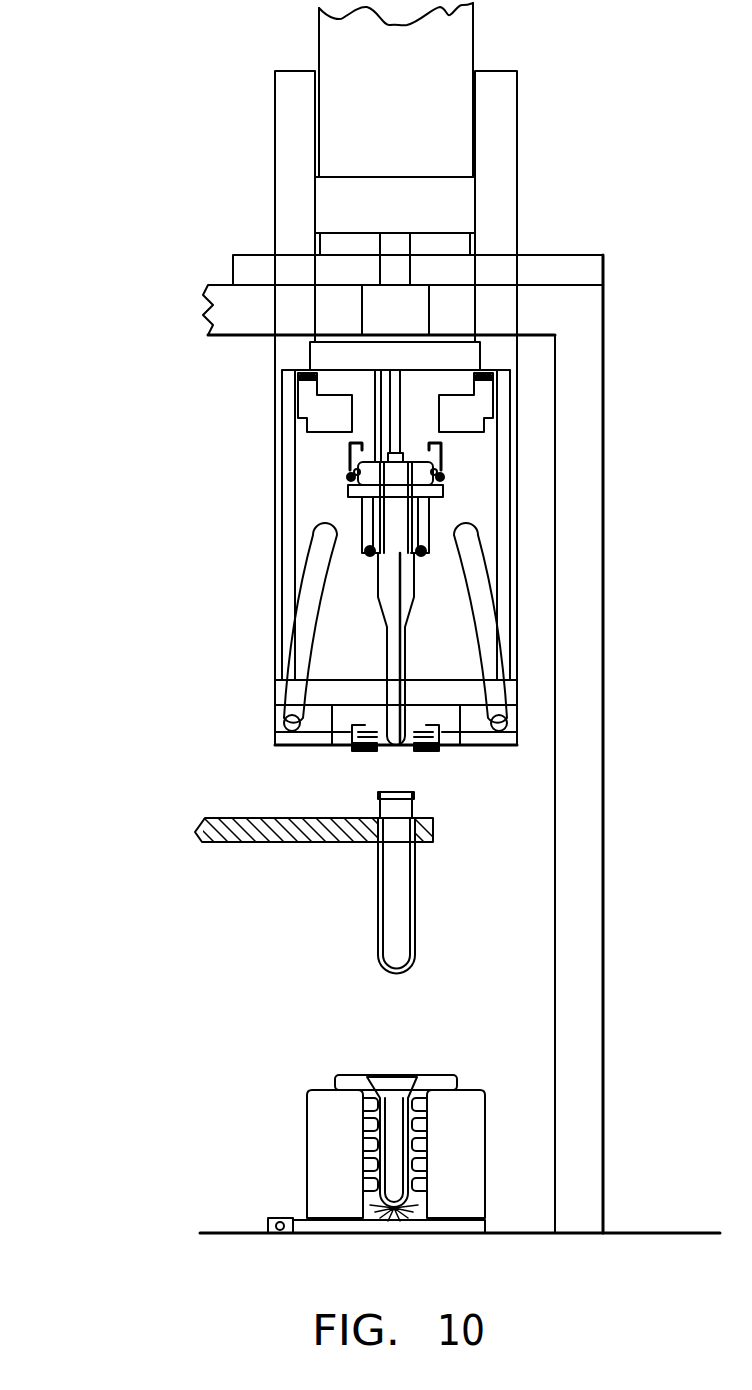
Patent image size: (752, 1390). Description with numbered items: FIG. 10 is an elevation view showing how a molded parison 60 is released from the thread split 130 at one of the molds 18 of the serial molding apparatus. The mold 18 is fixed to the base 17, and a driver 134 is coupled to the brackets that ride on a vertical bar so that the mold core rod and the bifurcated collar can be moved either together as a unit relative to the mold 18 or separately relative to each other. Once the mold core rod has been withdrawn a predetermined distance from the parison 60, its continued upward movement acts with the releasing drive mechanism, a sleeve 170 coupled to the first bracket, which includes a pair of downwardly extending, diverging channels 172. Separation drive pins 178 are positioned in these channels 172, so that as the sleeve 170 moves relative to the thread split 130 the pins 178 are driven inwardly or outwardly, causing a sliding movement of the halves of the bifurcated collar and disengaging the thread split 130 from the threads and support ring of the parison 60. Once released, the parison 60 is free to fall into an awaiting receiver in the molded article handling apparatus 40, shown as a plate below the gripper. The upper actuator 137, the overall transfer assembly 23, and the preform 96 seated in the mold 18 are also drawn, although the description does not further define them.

The actuator cylinder 137 is at (450, 43).
The driver 134 is at (260, 183).
The base 17 is at (590, 831).
The transfer gripper assembly 23 is at (358, 578).
The sleeve 170 is at (273, 503).
The diverging channels 172 is at (310, 577).
The separation drive pins 178 is at (284, 720).
The thread split 130 is at (360, 752).
The molded article handling apparatus 40 is at (265, 845).
The parison 60 is at (375, 943).
The mold 18 is at (310, 1130).
The preform in mold 96 is at (400, 1082).